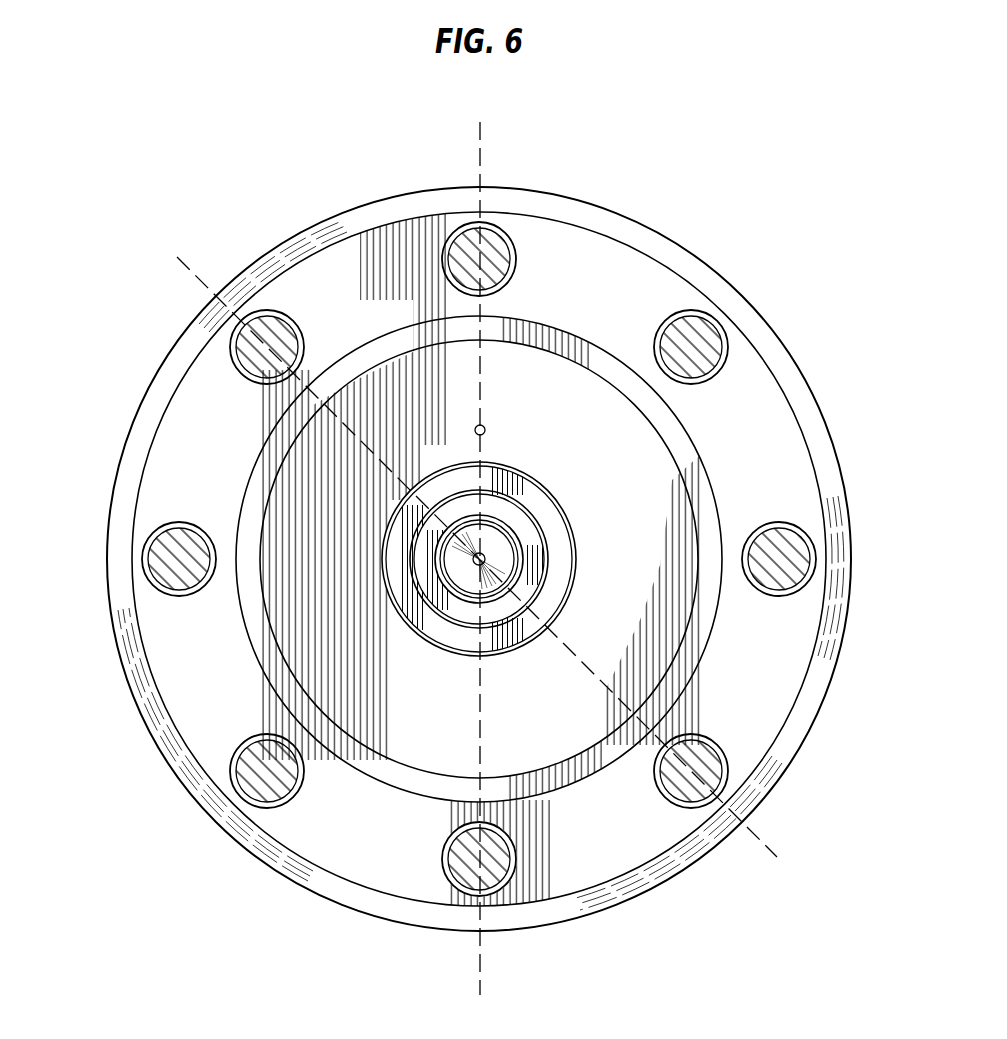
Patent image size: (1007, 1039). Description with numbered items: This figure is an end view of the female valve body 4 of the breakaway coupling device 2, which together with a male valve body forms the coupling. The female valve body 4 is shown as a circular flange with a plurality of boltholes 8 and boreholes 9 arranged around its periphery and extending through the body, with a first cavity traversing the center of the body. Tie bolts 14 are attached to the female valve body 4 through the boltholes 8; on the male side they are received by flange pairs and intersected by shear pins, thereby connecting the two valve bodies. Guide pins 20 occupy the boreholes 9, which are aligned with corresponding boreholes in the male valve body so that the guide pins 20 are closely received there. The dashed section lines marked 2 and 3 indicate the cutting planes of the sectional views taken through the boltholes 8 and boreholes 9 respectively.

The breakaway coupling device 2 is at (433, 995).
The section line 3- 3 is at (752, 904).
The female valve body 4 is at (645, 229).
The boltholes 8 is at (487, 238).
The boreholes 9 is at (722, 332).
The tie bolts 14 is at (497, 236).
The guide pins 20 is at (708, 323).